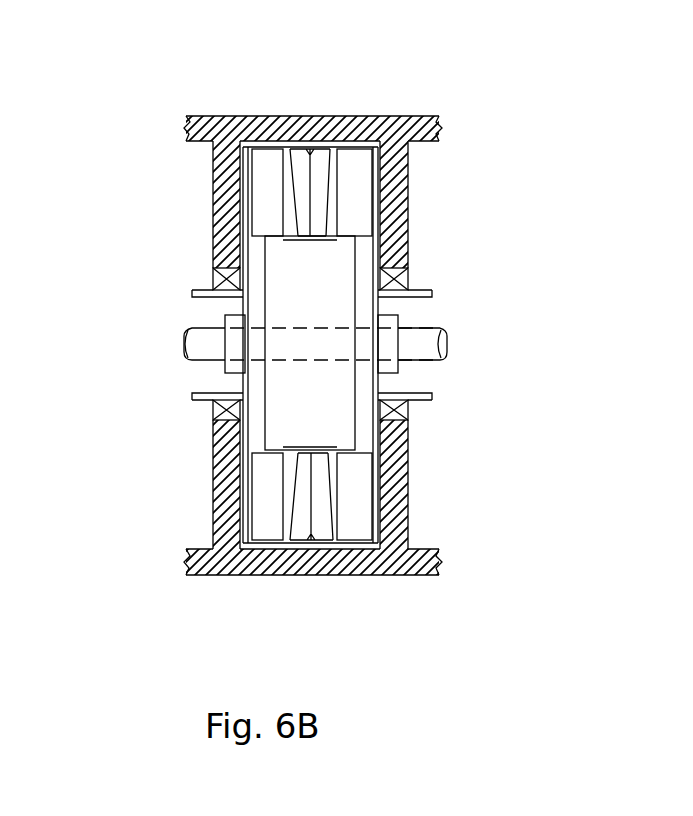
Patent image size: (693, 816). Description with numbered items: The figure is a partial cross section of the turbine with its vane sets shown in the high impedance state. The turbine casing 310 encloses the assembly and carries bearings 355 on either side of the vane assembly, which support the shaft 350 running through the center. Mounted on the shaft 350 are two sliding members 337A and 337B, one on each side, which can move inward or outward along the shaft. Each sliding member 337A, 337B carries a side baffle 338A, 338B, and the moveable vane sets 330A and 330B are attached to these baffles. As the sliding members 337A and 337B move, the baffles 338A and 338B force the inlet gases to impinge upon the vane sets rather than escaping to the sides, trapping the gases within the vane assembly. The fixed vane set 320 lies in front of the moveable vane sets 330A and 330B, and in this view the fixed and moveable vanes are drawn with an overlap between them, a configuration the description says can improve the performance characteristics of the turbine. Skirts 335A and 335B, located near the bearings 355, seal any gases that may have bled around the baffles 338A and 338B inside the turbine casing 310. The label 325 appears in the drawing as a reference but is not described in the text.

The turbine casing 310 is at (385, 120).
The fixed vane set 320 is at (316, 170).
The magnet block (ref) 325 is at (330, 312).
The moveable vane set 330A is at (355, 190).
The moveable vane set 330B is at (265, 205).
The skirt 335A is at (433, 398).
The skirt 335B is at (195, 397).
The sliding member 337A is at (388, 336).
The sliding member 337B is at (235, 343).
The side baffle 338A is at (375, 462).
The side baffle 338B is at (248, 468).
The shaft 350 is at (430, 350).
The bearings 355 is at (212, 280).